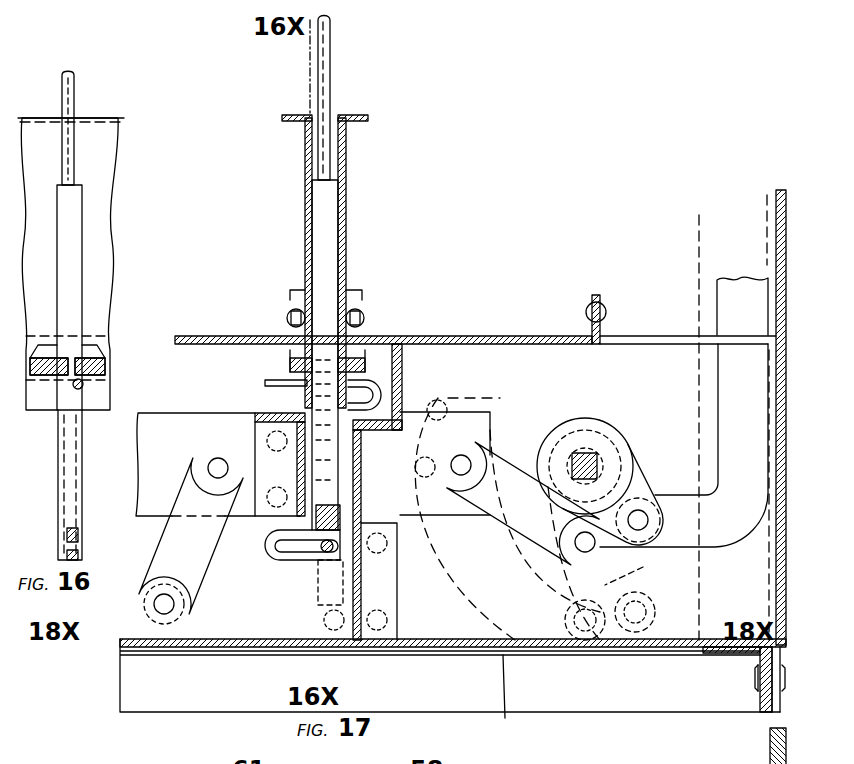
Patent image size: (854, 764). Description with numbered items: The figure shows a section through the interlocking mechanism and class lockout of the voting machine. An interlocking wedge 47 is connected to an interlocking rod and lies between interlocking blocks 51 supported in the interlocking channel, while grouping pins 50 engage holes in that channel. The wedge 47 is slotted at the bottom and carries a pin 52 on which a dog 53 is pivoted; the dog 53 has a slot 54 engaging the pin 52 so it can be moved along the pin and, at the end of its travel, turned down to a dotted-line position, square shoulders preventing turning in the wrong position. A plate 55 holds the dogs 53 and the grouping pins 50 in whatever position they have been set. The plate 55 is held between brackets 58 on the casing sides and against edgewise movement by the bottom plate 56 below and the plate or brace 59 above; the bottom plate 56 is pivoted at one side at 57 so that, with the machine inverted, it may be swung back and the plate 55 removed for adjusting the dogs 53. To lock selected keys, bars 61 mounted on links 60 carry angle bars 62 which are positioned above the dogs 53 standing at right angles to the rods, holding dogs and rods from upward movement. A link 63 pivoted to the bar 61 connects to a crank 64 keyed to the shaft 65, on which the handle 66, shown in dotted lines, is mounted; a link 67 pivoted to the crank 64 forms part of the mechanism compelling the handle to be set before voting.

In FIG. 16, the interlocking wedge 47 is at (75, 258).
In FIG. 17, the interlocking wedge 47 is at (330, 253).
In FIG. 17, the grouping pin 50 is at (268, 382).
In FIG. 16, the interlocking block 51 is at (105, 362).
In FIG. 17, the interlocking block 51 is at (368, 358).
In FIG. 17, the pin 52 is at (325, 549).
In FIG. 16, the dog 53 is at (78, 535).
In FIG. 17, the dog 53 is at (270, 553).
In FIG. 17, the slot 54 is at (288, 548).
In FIG. 17, the plate 55 is at (402, 380).
In FIG. 17, the bottom plate 56 is at (512, 701).
In FIG. 17, the pivot 57 is at (757, 688).
In FIG. 17, the bracket 58 is at (324, 622).
In FIG. 17, the plate or brace 59 is at (457, 337).
In FIG. 17, the link 60 is at (157, 553).
In FIG. 17, the bar 61 is at (155, 420).
In FIG. 17, the angle bar 62 is at (258, 415).
In FIG. 17, the link 63 is at (513, 517).
In FIG. 17, the crank 64 is at (630, 477).
In FIG. 17, the shaft 65 is at (597, 452).
In FIG. 17, the handle 66 is at (640, 572).
In FIG. 17, the link 67 is at (733, 363).